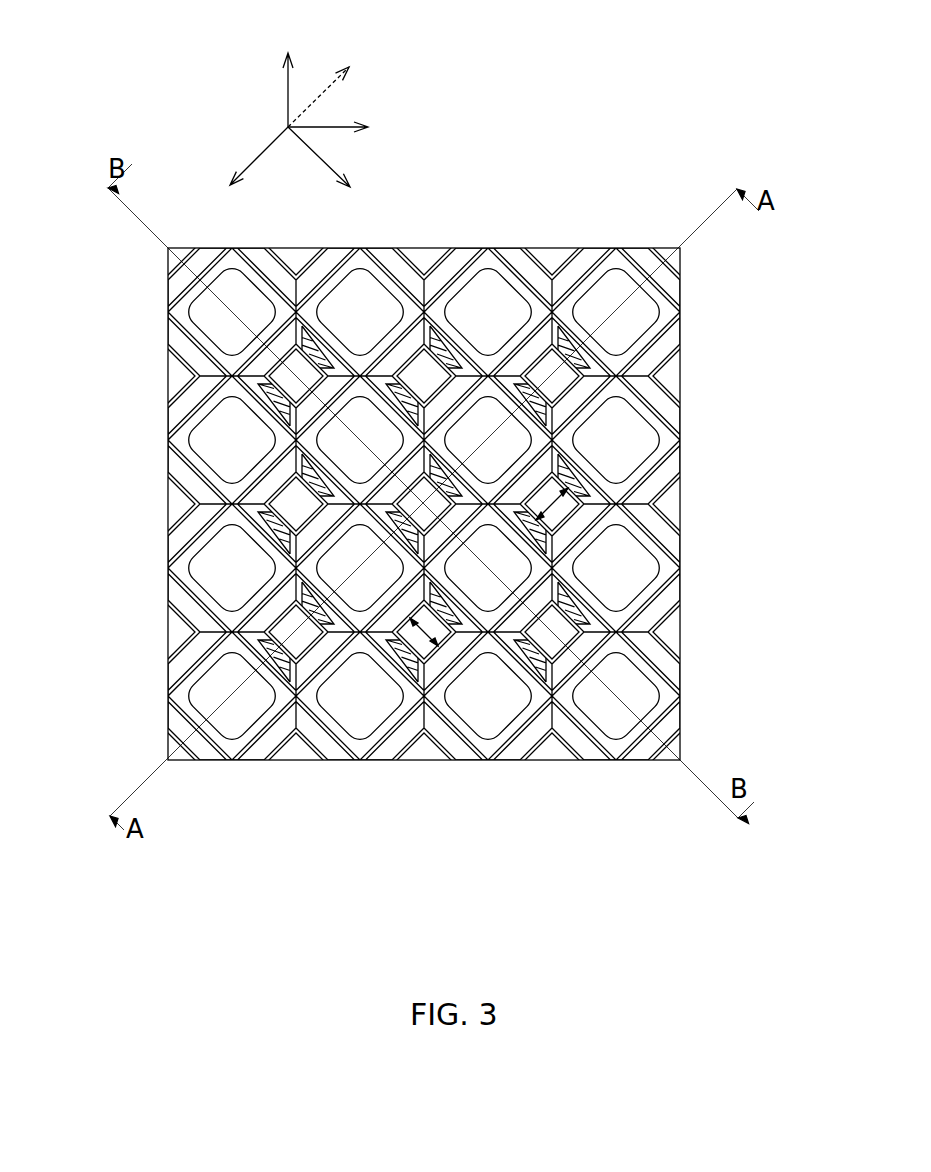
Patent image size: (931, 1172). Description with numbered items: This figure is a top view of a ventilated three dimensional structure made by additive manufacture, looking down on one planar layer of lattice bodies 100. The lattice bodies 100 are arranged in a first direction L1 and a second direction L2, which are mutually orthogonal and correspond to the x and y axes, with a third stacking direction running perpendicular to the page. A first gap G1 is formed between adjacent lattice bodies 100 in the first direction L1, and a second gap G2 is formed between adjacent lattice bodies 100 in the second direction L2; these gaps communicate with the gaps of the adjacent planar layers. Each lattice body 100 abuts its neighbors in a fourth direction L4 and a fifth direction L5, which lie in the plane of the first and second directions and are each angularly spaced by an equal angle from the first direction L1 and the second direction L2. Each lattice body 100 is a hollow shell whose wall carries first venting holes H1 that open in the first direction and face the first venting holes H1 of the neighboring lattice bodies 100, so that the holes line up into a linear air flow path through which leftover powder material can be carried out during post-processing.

The lattice body 100 is at (625, 260).
The first venting hole H1 is at (276, 398).
The first gap G1 is at (577, 522).
The second gap G2 is at (420, 640).
The first direction L1 is at (245, 176).
The second direction L2 is at (330, 175).
The fourth direction L4 is at (285, 72).
The fifth direction L5 is at (347, 131).